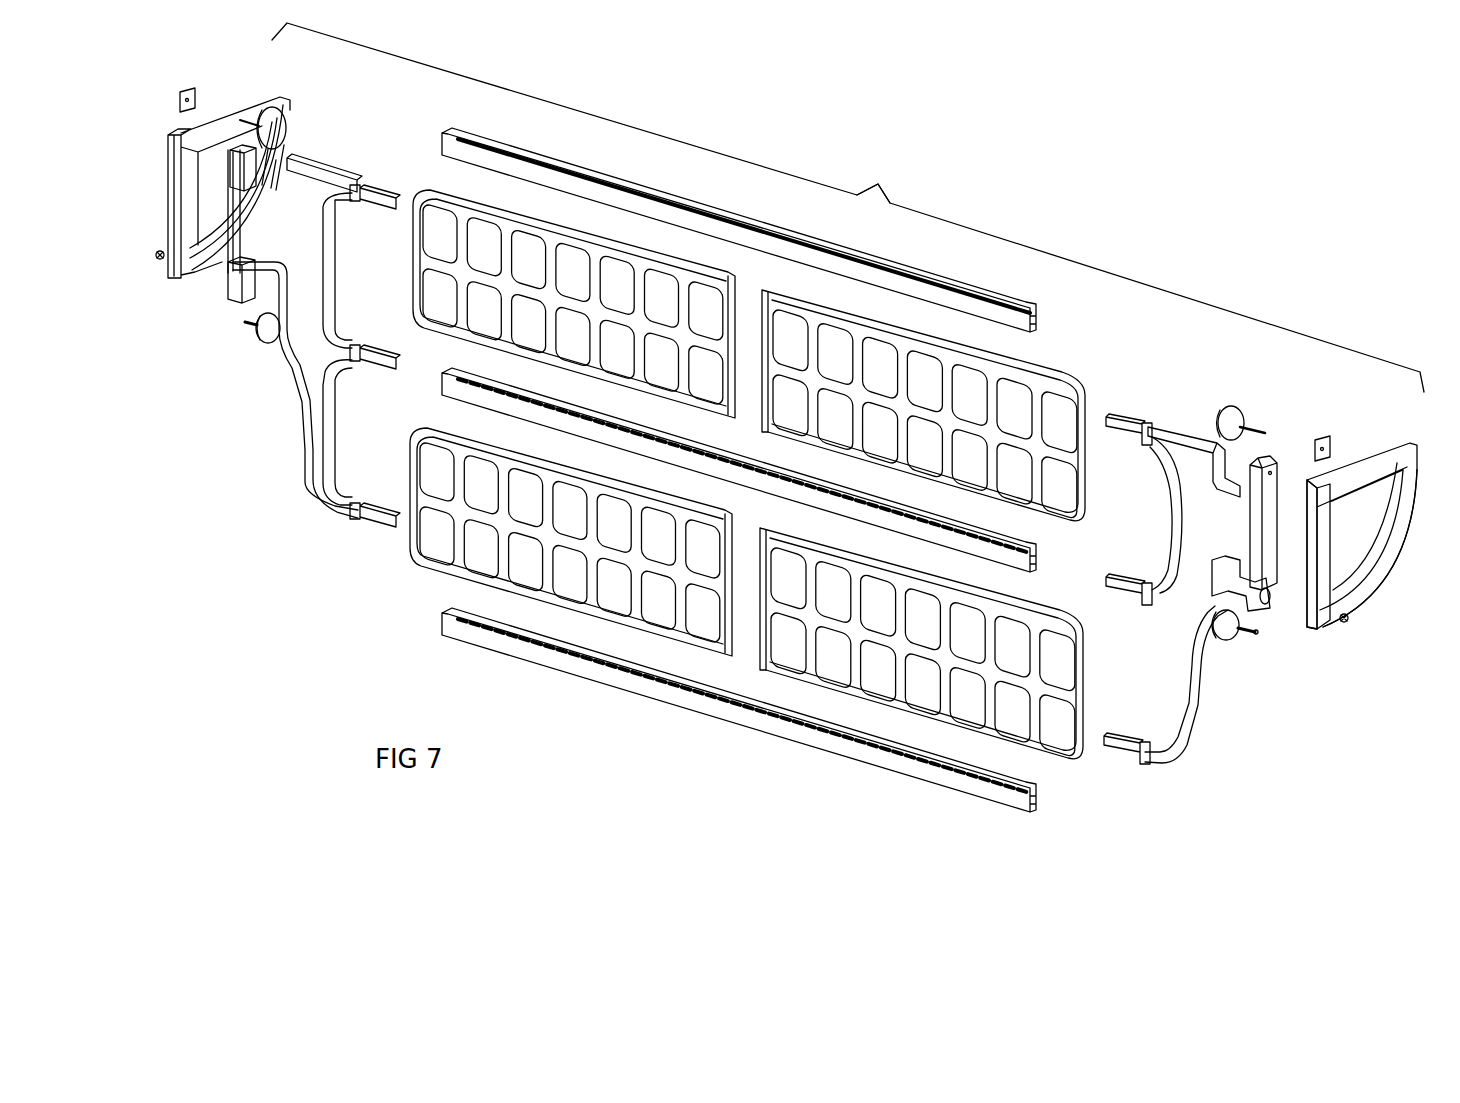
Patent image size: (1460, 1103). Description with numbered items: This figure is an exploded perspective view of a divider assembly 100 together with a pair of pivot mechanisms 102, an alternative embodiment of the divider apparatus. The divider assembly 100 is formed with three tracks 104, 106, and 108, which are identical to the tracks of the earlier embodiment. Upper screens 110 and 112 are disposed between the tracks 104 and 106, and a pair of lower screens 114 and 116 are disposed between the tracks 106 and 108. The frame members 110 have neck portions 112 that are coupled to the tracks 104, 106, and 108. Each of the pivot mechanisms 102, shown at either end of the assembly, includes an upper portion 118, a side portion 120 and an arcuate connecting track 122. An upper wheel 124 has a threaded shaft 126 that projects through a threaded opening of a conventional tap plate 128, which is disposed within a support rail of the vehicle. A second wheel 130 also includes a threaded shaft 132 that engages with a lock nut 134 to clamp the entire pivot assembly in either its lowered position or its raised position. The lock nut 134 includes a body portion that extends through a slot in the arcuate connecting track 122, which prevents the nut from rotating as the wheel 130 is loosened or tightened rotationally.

The divider assembly 100 is at (886, 182).
The pivot mechanism 102 is at (288, 98).
The track 104 is at (1037, 321).
The track 106 is at (1037, 560).
The track 108 is at (1037, 800).
The upper screen 110 is at (310, 460).
The neck portion 112 is at (380, 190).
The lower screen 114 is at (548, 578).
The lower screen 116 is at (810, 660).
The upper portion 118 is at (1378, 470).
The side portion 120 is at (1315, 576).
The arcuate connecting track 122 is at (1380, 585).
The upper wheel 124 is at (285, 125).
The threaded shaft 126 is at (1258, 425).
The tap plate 128 is at (192, 98).
The wheel 130 is at (262, 340).
The threaded shaft 132 is at (1240, 634).
The lock nut 134 is at (160, 258).